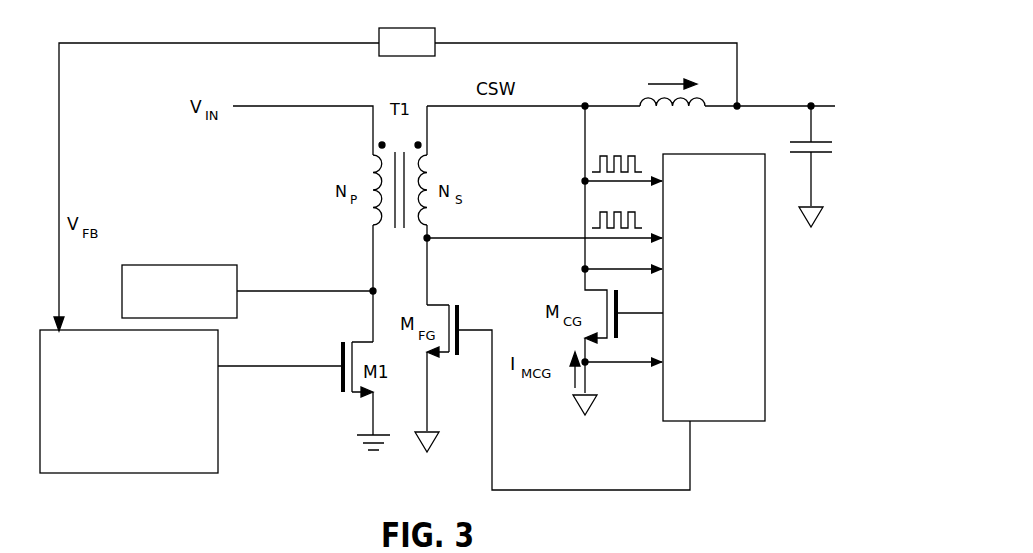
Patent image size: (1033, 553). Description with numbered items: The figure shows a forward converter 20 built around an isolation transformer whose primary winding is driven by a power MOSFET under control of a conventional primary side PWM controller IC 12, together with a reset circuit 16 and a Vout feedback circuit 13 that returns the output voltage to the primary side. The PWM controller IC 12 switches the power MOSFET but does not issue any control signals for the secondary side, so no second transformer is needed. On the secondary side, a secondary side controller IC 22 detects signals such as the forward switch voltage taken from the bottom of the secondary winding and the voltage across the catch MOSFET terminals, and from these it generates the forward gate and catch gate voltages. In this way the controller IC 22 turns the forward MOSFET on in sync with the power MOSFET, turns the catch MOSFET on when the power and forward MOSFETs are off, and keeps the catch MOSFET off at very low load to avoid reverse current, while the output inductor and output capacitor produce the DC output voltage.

The primary side PWM controller IC 12 is at (218, 463).
The Vout feedback circuit 13 is at (378, 50).
The reset circuit 16 is at (203, 264).
The forward converter 20 is at (844, 66).
The secondary side controller IC 22 is at (765, 363).